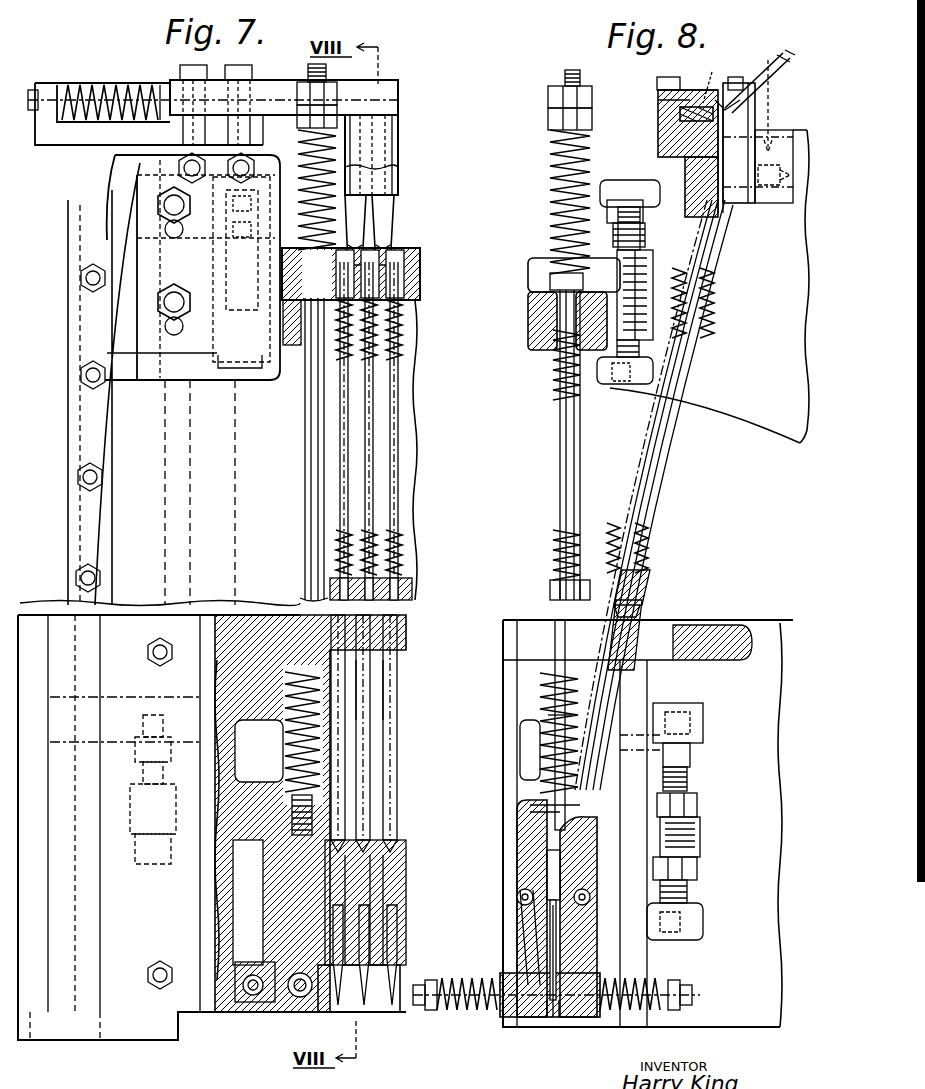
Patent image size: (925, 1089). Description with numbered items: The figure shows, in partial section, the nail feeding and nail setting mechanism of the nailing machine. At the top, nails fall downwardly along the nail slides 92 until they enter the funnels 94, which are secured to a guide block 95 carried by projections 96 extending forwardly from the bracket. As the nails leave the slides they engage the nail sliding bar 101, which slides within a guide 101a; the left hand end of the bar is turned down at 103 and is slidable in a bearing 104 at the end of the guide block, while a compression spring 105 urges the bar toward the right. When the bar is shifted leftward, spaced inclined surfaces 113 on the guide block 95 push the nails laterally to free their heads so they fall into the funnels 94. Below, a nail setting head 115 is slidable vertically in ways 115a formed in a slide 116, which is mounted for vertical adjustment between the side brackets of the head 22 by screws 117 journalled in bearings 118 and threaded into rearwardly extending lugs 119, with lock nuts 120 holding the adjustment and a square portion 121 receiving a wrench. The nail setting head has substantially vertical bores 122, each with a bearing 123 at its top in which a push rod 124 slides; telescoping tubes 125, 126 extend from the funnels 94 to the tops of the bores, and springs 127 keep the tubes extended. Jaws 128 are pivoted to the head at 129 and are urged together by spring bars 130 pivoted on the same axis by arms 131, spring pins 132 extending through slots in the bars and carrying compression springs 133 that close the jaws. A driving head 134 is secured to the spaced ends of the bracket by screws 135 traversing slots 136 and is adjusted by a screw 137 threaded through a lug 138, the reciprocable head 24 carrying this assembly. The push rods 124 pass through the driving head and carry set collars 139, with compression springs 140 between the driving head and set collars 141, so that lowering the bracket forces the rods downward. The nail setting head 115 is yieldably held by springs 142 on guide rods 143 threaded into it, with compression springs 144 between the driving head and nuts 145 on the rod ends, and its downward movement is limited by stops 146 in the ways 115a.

In FIG. 7, the head 22 is at (37, 614).
In FIG. 8, the head 22 is at (760, 635).
In FIG. 8, the reciprocable head 24 is at (742, 402).
In FIG. 8, the nail slides 92 is at (762, 70).
In FIG. 7, the funnels 94 is at (383, 220).
In FIG. 8, the funnels 94 is at (727, 223).
In FIG. 7, the guide block 95 is at (383, 137).
In FIG. 8, the guide block 95 is at (659, 140).
In FIG. 8, the projections 96 is at (781, 130).
In FIG. 8, the nail sliding bar 101 is at (679, 115).
In FIG. 7, the guide 101a is at (398, 99).
In FIG. 8, the guide 101a is at (659, 98).
In FIG. 7, the turned down end 103 is at (122, 79).
In FIG. 8, the turned down end 103 is at (711, 79).
In FIG. 7, the bearing 104 is at (48, 88).
In FIG. 8, the compression spring 105 is at (657, 87).
In FIG. 8, the inclined surfaces 113 is at (746, 167).
In FIG. 7, the nail setting head 115 is at (398, 814).
In FIG. 8, the nail setting head 115 is at (520, 836).
In FIG. 7, the ways 115a is at (247, 783).
In FIG. 7, the slide 116 is at (221, 1011).
In FIG. 8, the slide 116 is at (520, 750).
In FIG. 7, the screws 117 is at (145, 769).
In FIG. 8, the screws 117 is at (687, 787).
In FIG. 8, the bearings 118 is at (680, 706).
In FIG. 8, the lugs 119 is at (700, 834).
In FIG. 8, the lock nuts 120 is at (697, 813).
In FIG. 8, the square portion 121 is at (690, 757).
In FIG. 7, the bores 122 is at (388, 878).
In FIG. 8, the bores 122 is at (553, 875).
In FIG. 8, the bearing 123 is at (530, 813).
In FIG. 7, the push rods 124 is at (347, 442).
In FIG. 8, the push rods 124 is at (555, 642).
In FIG. 8, the telescoping tube 125 is at (672, 496).
In FIG. 7, the telescoping tube 126 is at (360, 688).
In FIG. 8, the telescoping tube 126 is at (655, 599).
In FIG. 8, the springs 127 is at (672, 542).
In FIG. 8, the jaws 128 is at (545, 1018).
In FIG. 8, the pivot 129 is at (517, 899).
In FIG. 8, the spring bars 130 is at (510, 1018).
In FIG. 8, the arms 131 is at (512, 933).
In FIG. 7, the spring pins 132 is at (300, 1008).
In FIG. 8, the spring pins 132 is at (690, 976).
In FIG. 8, the compression springs 133 is at (512, 977).
In FIG. 8, the driving head 134 is at (530, 322).
In FIG. 7, the screws 135 is at (160, 204).
In FIG. 7, the slots 136 is at (165, 225).
In FIG. 7, the screw 137 is at (222, 261).
In FIG. 8, the screw 137 is at (640, 239).
In FIG. 8, the lug 138 is at (640, 286).
In FIG. 7, the set collars 139 is at (413, 262).
In FIG. 8, the set collars 139 is at (528, 279).
In FIG. 7, the compression springs 140 is at (405, 551).
In FIG. 8, the compression springs 140 is at (556, 382).
In FIG. 7, the set collars 141 is at (395, 594).
In FIG. 8, the set collars 141 is at (548, 599).
In FIG. 7, the springs 142 is at (330, 726).
In FIG. 8, the springs 142 is at (560, 720).
In FIG. 7, the guide rods 143 is at (306, 460).
In FIG. 8, the guide rods 143 is at (555, 156).
In FIG. 7, the compression springs 144 is at (398, 173).
In FIG. 8, the compression springs 144 is at (660, 164).
In FIG. 7, the nuts 145 is at (336, 98).
In FIG. 8, the nuts 145 is at (552, 98).
In FIG. 7, the stops 146 is at (262, 958).